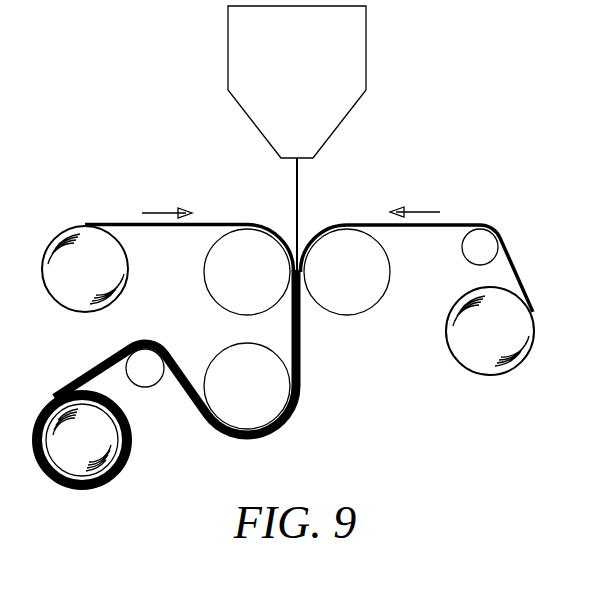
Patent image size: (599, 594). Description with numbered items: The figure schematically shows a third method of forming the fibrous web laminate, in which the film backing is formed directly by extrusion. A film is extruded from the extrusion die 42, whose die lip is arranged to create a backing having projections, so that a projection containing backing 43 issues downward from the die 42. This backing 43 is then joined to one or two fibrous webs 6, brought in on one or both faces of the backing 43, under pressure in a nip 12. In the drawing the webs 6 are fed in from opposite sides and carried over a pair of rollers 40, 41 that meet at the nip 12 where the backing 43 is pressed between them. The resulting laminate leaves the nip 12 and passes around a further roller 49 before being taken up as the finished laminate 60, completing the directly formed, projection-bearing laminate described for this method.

The extrusion die 42 is at (366, 76).
The projection containing backing 43 is at (298, 184).
The fibrous web 6 is at (453, 223).
The first roller 40 is at (207, 288).
The second roller 41 is at (381, 299).
The nip 12 is at (304, 277).
The chill roller 49 is at (260, 410).
The wind-up roll 60 is at (194, 395).